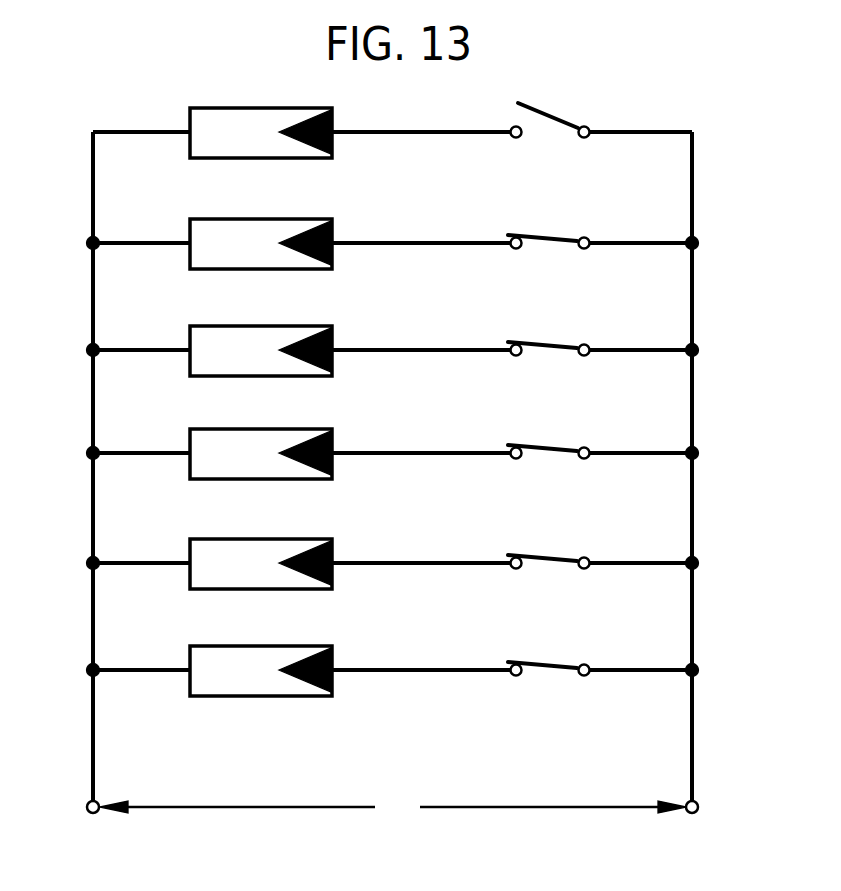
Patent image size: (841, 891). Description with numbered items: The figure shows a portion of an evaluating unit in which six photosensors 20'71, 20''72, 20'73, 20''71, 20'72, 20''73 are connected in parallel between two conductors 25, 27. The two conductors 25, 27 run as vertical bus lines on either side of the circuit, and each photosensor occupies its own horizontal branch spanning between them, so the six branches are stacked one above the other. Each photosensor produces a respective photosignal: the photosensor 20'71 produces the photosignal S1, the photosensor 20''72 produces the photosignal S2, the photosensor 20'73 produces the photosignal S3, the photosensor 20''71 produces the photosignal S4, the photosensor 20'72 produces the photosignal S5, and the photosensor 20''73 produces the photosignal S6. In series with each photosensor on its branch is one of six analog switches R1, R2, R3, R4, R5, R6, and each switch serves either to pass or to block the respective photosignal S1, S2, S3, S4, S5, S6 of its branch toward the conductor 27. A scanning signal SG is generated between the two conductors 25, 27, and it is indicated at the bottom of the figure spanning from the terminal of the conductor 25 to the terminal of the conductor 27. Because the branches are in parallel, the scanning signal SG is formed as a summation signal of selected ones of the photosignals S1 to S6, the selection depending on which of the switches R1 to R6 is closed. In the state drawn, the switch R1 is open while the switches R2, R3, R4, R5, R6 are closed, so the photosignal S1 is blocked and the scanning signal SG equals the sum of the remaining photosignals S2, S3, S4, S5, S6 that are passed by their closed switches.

The photosensor 20'71 is at (261, 105).
The photosensor 20''72 is at (261, 224).
The photosensor 20'73 is at (261, 332).
The photosensor 20''71 is at (261, 434).
The photosensor 20'72 is at (261, 544).
The photosensor 20''73 is at (261, 651).
The photosignal S1 is at (390, 132).
The photosignal S2 is at (390, 243).
The photosignal S3 is at (390, 350).
The photosignal S4 is at (390, 453).
The photosignal S5 is at (390, 563).
The photosignal S6 is at (390, 670).
The analog switch R1 is at (550, 115).
The analog switch R2 is at (550, 236).
The analog switch R3 is at (550, 343).
The analog switch R4 is at (550, 446).
The analog switch R5 is at (550, 556).
The analog switch R6 is at (550, 663).
The scanning signal SG is at (393, 810).
The conductor 25 is at (92, 736).
The conductor 27 is at (694, 733).